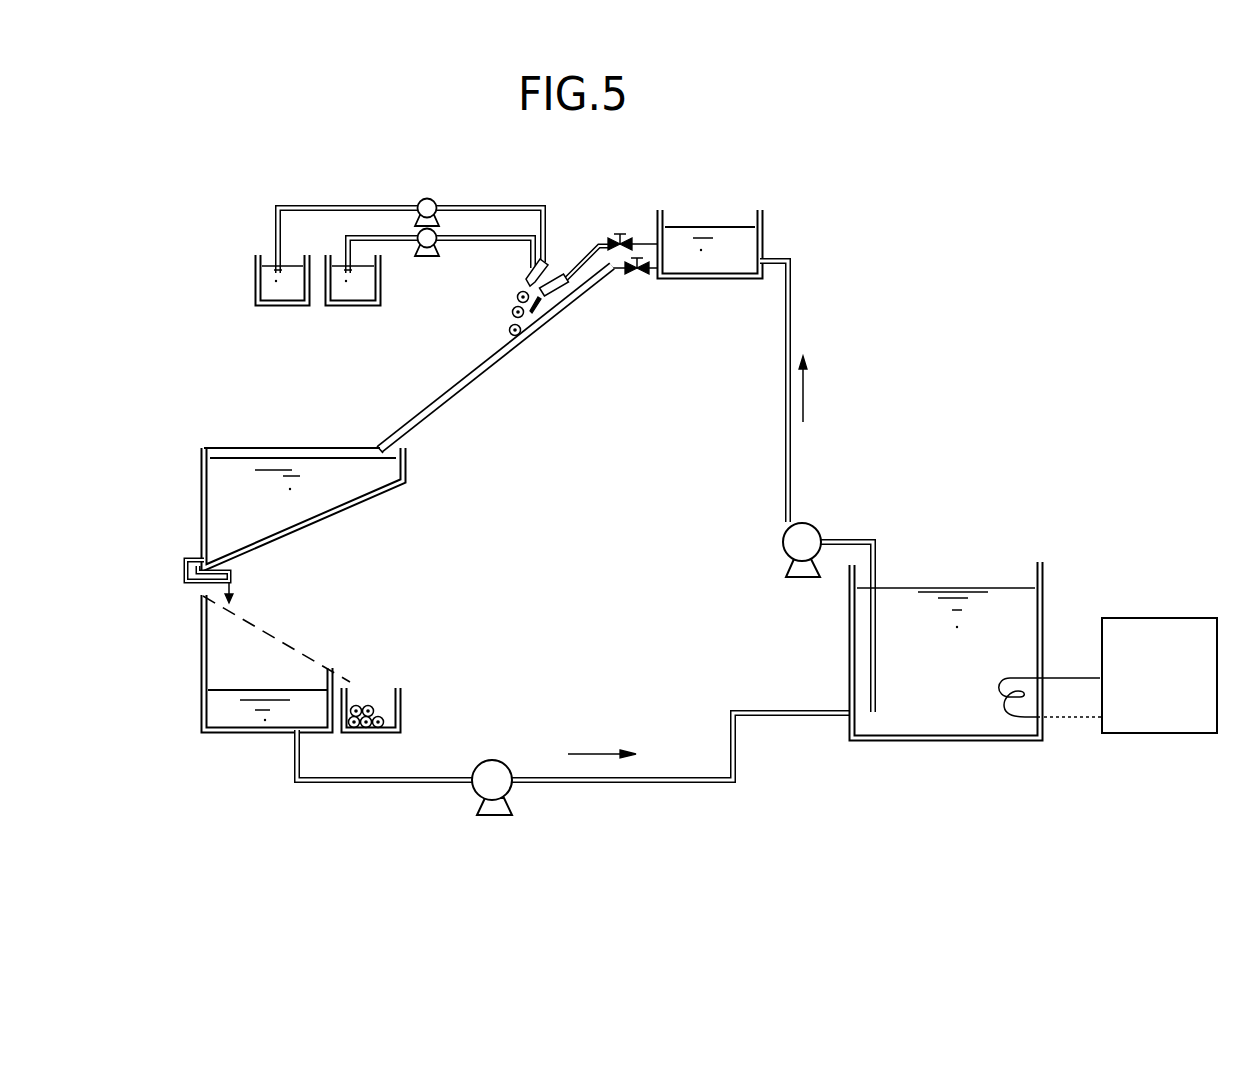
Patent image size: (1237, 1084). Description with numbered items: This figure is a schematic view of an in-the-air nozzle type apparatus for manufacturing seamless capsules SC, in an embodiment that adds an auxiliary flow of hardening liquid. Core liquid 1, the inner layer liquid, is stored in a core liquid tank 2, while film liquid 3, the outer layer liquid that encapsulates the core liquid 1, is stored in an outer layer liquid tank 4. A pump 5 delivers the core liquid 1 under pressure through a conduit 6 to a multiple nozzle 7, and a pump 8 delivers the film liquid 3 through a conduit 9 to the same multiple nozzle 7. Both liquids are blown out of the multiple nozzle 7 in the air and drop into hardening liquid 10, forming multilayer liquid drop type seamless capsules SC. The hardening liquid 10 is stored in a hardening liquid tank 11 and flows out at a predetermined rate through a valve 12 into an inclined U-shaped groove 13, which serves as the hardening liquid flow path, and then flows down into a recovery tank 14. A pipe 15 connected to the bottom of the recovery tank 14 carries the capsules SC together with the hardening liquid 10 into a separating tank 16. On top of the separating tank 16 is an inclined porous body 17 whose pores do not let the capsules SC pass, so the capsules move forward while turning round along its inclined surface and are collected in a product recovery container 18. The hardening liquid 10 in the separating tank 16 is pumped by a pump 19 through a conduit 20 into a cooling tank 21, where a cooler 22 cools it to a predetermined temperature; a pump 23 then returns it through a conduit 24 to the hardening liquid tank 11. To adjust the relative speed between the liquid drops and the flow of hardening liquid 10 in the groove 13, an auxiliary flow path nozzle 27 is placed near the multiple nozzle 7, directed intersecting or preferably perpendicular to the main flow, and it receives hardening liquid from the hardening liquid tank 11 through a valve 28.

The core liquid 1 is at (278, 283).
The core liquid tank 2 is at (258, 257).
The film liquid 3 is at (352, 287).
The outer layer liquid tank 4 is at (378, 302).
The pump 5 is at (420, 200).
The conduit 6 is at (348, 207).
The multiple nozzle 7 is at (540, 260).
The pump 8 is at (427, 257).
The conduit 9 is at (508, 243).
The hardening liquid 10 is at (727, 228).
The hardening liquid tank 11 is at (765, 233).
The valve 12 is at (637, 276).
The inclined U-shaped groove 13 is at (533, 337).
The recovery tank 14 is at (360, 500).
The pipe 15 is at (183, 558).
The separating tank 16 is at (202, 683).
The inclined porous body 17 is at (290, 645).
The product recovery container 18 is at (402, 705).
The seamless capsule SC is at (368, 705).
The pump 19 is at (495, 772).
The conduit 20 is at (685, 776).
The cooling tank 21 is at (1000, 742).
The cooler 22 is at (1166, 622).
The pump 23 is at (782, 546).
The conduit 24 is at (790, 462).
The auxiliary flow path nozzle 27 is at (560, 275).
The valve 28 is at (622, 232).